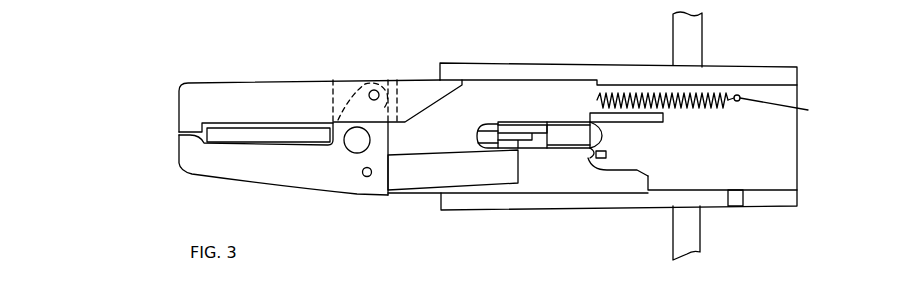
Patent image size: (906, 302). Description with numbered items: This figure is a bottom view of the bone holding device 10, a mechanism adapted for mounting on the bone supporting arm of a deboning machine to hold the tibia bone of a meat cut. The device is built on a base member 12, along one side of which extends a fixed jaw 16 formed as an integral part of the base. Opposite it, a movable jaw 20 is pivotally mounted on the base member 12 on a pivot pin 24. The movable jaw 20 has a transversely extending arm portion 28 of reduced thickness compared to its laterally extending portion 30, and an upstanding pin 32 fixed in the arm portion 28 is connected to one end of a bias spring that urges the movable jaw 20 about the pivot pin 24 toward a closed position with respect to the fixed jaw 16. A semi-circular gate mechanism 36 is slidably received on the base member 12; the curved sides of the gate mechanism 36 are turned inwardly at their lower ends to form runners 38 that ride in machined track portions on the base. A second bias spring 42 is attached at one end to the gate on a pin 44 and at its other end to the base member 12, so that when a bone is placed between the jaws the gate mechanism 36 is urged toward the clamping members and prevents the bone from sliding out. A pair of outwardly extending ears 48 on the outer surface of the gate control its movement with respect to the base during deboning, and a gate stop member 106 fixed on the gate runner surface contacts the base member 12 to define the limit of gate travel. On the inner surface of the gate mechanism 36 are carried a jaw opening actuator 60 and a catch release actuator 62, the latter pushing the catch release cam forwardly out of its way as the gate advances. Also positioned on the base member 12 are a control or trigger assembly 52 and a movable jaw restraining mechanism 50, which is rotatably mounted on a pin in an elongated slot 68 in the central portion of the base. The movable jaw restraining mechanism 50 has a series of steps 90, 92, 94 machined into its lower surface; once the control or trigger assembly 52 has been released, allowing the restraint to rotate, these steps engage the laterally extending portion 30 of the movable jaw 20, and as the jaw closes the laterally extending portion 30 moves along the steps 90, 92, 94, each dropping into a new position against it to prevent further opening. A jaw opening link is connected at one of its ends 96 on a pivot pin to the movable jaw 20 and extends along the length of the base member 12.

The bone holding device 10 is at (160, 112).
The base member 12 is at (597, 183).
The fixed jaw 16 is at (220, 93).
The movable jaw 20 is at (290, 175).
The pivot pin 24 is at (357, 140).
The arm portion 28 is at (392, 80).
The laterally extending portion 30 is at (472, 182).
The upstanding pin 32 is at (365, 78).
The gate mechanism 36 is at (790, 100).
The runners 38 is at (487, 75).
The second bias spring 42 is at (737, 102).
The pin 44 is at (718, 106).
The ears 48 is at (680, 33).
The movable jaw restraining mechanism 50 is at (562, 130).
The control or trigger assembly 52 is at (273, 135).
The jaw opening actuator 60 is at (660, 120).
The catch release actuator 62 is at (607, 154).
The elongated slot 68 is at (585, 151).
The step 90 is at (518, 148).
The step 92 is at (513, 141).
The step 94 is at (533, 127).
The end of jaw opening link 96 is at (369, 176).
The gate stop member 106 is at (735, 195).